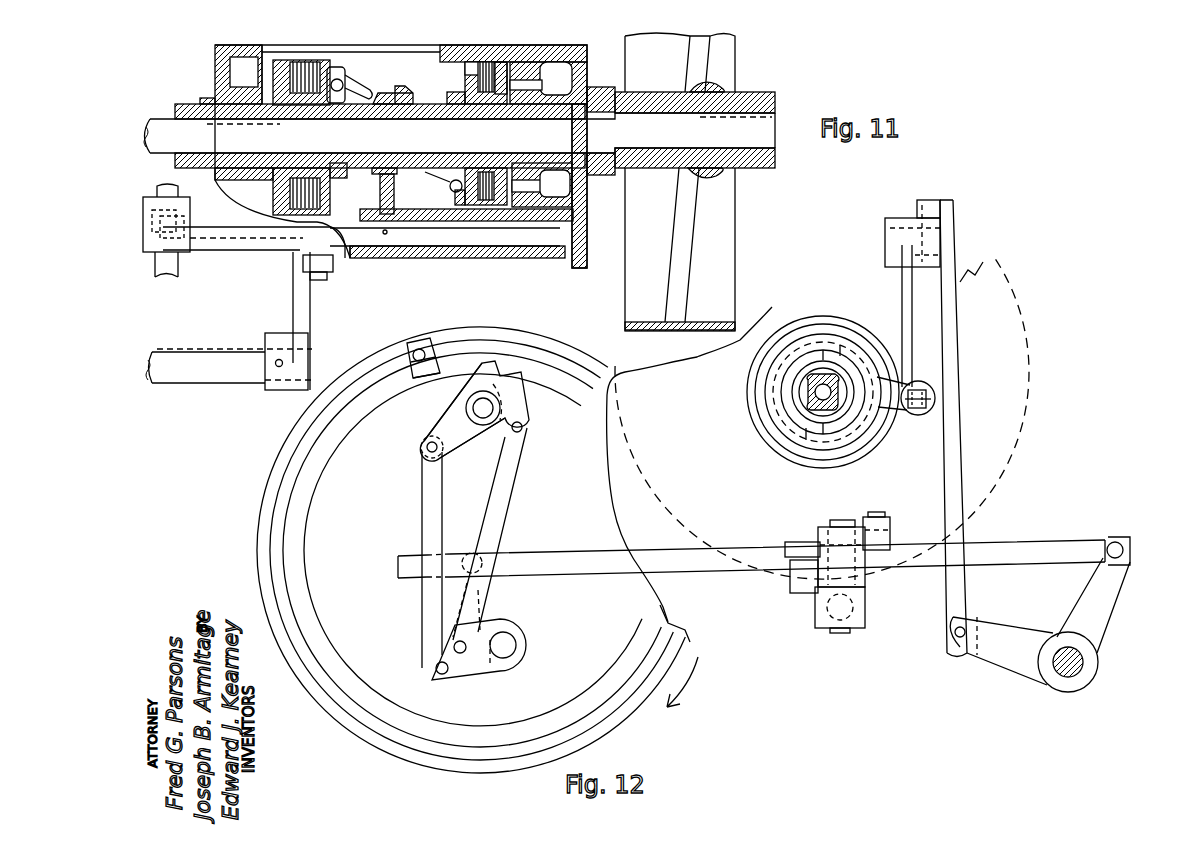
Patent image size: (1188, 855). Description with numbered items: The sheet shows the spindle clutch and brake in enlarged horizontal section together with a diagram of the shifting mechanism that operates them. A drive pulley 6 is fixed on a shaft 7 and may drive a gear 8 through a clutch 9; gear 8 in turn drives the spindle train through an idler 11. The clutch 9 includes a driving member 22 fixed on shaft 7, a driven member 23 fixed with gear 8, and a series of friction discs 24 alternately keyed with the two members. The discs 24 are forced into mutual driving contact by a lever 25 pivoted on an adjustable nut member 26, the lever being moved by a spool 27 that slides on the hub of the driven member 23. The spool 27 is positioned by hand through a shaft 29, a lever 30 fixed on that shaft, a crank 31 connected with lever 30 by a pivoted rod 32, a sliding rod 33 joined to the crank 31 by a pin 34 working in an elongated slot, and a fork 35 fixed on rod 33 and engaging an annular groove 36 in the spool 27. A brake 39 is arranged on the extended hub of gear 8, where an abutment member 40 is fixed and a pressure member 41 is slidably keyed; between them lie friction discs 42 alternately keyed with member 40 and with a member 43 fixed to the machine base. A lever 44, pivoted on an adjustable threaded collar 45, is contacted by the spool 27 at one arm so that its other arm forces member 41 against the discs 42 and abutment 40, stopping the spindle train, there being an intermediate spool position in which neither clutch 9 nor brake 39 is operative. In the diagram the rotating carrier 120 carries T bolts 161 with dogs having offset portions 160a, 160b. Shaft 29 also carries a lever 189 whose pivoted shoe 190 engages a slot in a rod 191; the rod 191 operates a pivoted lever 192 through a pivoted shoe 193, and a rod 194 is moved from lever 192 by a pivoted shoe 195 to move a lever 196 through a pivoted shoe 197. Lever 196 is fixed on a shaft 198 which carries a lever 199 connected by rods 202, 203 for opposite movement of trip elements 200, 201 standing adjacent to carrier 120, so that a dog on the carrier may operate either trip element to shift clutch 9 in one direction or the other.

In FIG. 11, the drive pulley 6 is at (735, 185).
In FIG. 12, the drive pulley 6 is at (1030, 396).
In FIG. 11, the shaft 7 is at (163, 126).
In FIG. 12, the shaft 7 is at (812, 405).
In FIG. 11, the gear 8 is at (555, 183).
In FIG. 11, the clutch 9 is at (328, 64).
In FIG. 11, the idler 11 is at (541, 80).
In FIG. 11, the driving member 22 is at (282, 63).
In FIG. 11, the driven member 23 is at (428, 104).
In FIG. 12, the driven member 23 is at (795, 390).
In FIG. 11, the friction discs 24 is at (326, 208).
In FIG. 11, the lever 25 is at (368, 86).
In FIG. 11, the adjustable nut member 26 is at (340, 178).
In FIG. 11, the spool 27 is at (382, 92).
In FIG. 12, the spool 27 is at (804, 343).
In FIG. 11, the shaft 29 is at (175, 385).
In FIG. 12, the shaft 29 is at (1057, 677).
In FIG. 11, the lever 30 is at (266, 385).
In FIG. 12, the lever 30 is at (1003, 662).
In FIG. 11, the crank 31 is at (292, 240).
In FIG. 12, the crank 31 is at (902, 294).
In FIG. 11, the pivoted rod 32 is at (327, 276).
In FIG. 12, the pivoted rod 32 is at (958, 478).
In FIG. 11, the sliding rod 33 is at (437, 236).
In FIG. 12, the sliding rod 33 is at (935, 395).
In FIG. 12, the pin 34 is at (915, 415).
In FIG. 11, the fork 35 is at (394, 186).
In FIG. 12, the fork 35 is at (885, 418).
In FIG. 11, the annular groove 36 is at (398, 96).
In FIG. 11, the brake 39 is at (484, 60).
In FIG. 11, the abutment member 40 is at (500, 60).
In FIG. 11, the pressure member 41 is at (465, 66).
In FIG. 11, the friction discs 42 is at (487, 208).
In FIG. 11, the member 43 is at (513, 222).
In FIG. 11, the lever 44 is at (452, 194).
In FIG. 11, the adjustable threaded collar 45 is at (455, 92).
In FIG. 12, the carrier 120 is at (466, 342).
In FIG. 12, the dog portion 160a is at (418, 345).
In FIG. 12, the dog portion 160b is at (436, 376).
In FIG. 12, the T bolt 161 is at (416, 378).
In FIG. 12, the lever 189 is at (1120, 617).
In FIG. 12, the pivoted shoe 190 is at (1128, 554).
In FIG. 12, the rod 191 is at (1030, 545).
In FIG. 12, the pivoted lever 192 is at (818, 530).
In FIG. 12, the pivoted shoe 193 is at (890, 545).
In FIG. 12, the rod 194 is at (597, 575).
In FIG. 12, the pivoted shoe 195 is at (795, 575).
In FIG. 12, the lever 196 is at (505, 596).
In FIG. 12, the pivoted shoe 197 is at (470, 553).
In FIG. 12, the shaft 198 is at (516, 650).
In FIG. 12, the lever 199 is at (478, 672).
In FIG. 12, the trip element 200 is at (486, 360).
In FIG. 12, the trip element 201 is at (521, 373).
In FIG. 12, the rod 202 is at (422, 634).
In FIG. 12, the rod 203 is at (508, 496).